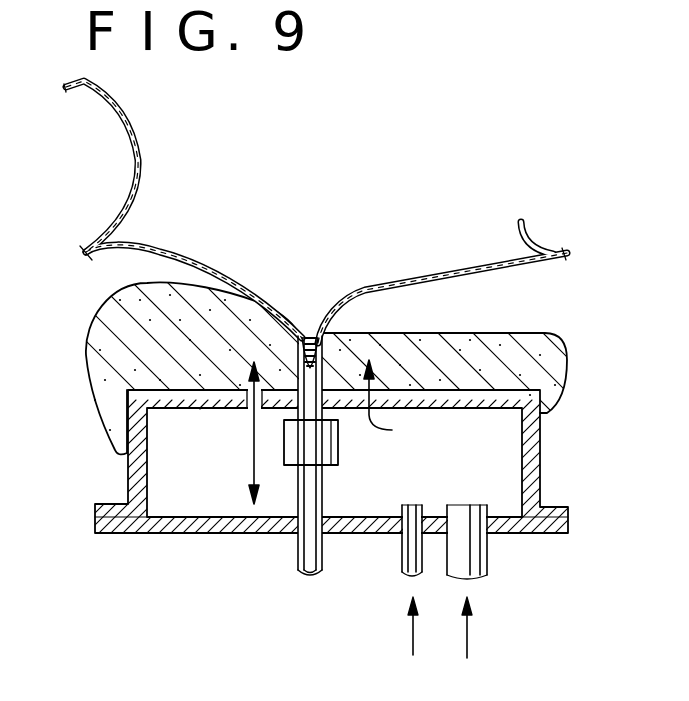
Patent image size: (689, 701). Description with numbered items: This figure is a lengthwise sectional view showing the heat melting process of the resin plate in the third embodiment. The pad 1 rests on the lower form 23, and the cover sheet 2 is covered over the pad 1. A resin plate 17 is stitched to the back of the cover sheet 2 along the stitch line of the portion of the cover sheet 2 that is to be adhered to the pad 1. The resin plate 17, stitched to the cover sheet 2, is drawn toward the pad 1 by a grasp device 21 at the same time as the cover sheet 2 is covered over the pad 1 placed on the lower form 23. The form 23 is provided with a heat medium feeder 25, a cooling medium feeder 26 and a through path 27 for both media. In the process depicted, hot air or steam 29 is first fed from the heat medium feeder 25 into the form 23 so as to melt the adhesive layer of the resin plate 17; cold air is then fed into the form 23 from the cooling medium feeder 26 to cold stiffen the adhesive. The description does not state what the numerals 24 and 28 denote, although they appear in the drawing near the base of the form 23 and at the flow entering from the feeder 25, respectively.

The pad 1 is at (133, 357).
The cover sheet 2 is at (123, 210).
The resin plate 17 is at (308, 318).
The grasp device 21 is at (297, 452).
The lower form 23 is at (128, 477).
The base plate 24 is at (132, 520).
The heat medium feeder 25 is at (473, 552).
The cooling medium feeder 26 is at (410, 552).
The through path 27 is at (250, 403).
The air flow 28 is at (467, 640).
The hot air or steam 29 is at (410, 632).